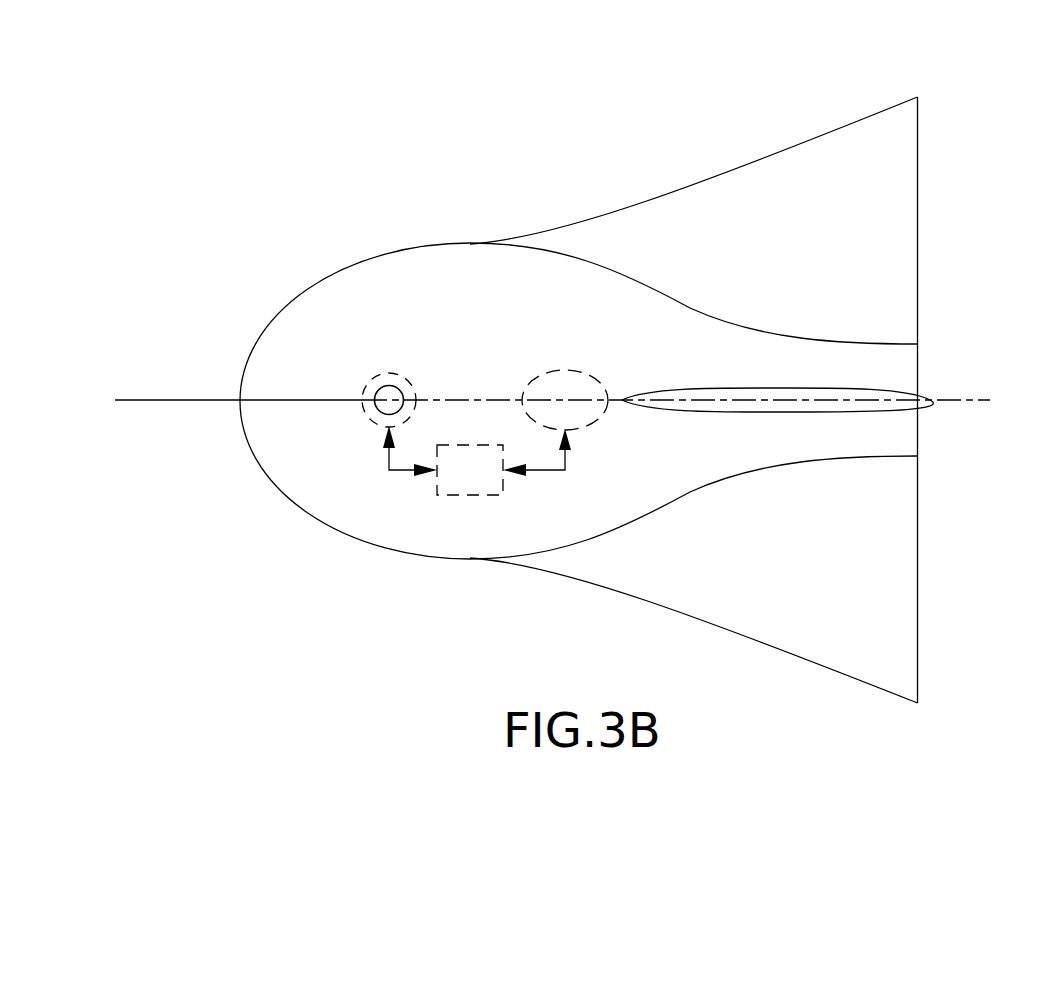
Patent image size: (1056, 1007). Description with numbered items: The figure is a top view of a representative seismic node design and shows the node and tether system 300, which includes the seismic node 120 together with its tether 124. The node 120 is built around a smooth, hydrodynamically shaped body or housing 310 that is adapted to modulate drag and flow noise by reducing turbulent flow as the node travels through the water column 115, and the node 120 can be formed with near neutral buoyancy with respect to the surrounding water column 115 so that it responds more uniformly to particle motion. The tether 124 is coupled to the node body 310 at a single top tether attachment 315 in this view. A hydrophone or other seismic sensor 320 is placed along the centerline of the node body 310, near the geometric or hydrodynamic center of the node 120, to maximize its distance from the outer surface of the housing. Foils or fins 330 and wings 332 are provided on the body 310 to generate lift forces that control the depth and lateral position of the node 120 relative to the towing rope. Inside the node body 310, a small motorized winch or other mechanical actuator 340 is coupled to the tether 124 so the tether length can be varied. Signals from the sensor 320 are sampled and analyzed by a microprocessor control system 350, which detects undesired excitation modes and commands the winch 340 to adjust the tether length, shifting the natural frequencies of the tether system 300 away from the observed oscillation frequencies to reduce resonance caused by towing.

The node and tether system 300 is at (162, 310).
The seismic node 120 is at (274, 264).
The node body 310 is at (353, 317).
The attachment 315 is at (390, 385).
The seismic sensor 320 is at (535, 373).
The foil 330 is at (765, 412).
The wing 332 is at (907, 193).
The actuator 340 is at (368, 422).
The microprocessor control system 350 is at (453, 495).
The tether 124 is at (162, 401).
The water column 115 is at (293, 602).